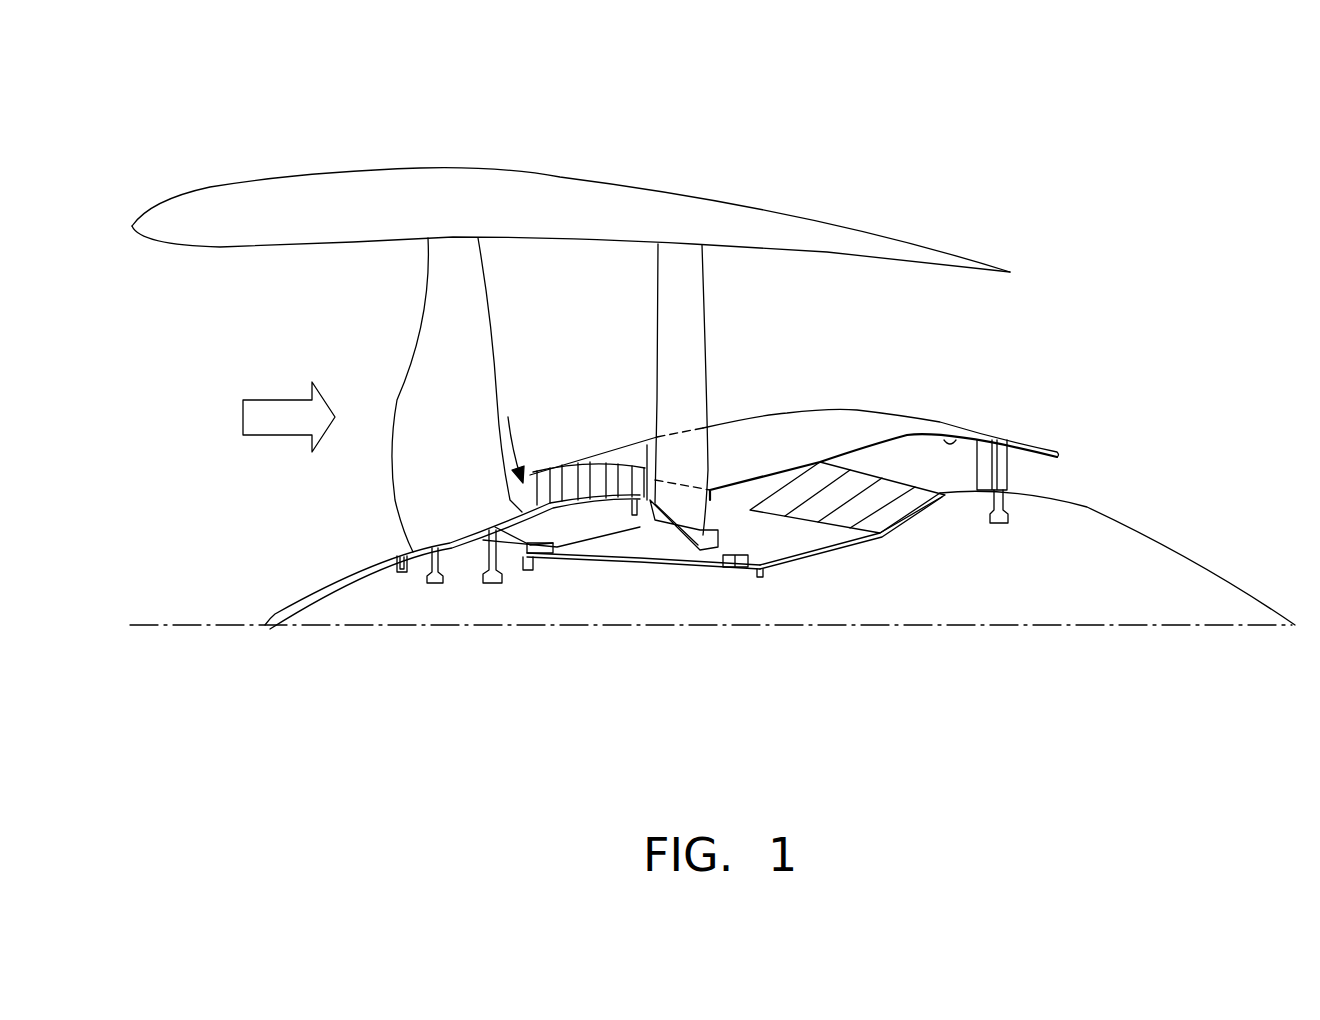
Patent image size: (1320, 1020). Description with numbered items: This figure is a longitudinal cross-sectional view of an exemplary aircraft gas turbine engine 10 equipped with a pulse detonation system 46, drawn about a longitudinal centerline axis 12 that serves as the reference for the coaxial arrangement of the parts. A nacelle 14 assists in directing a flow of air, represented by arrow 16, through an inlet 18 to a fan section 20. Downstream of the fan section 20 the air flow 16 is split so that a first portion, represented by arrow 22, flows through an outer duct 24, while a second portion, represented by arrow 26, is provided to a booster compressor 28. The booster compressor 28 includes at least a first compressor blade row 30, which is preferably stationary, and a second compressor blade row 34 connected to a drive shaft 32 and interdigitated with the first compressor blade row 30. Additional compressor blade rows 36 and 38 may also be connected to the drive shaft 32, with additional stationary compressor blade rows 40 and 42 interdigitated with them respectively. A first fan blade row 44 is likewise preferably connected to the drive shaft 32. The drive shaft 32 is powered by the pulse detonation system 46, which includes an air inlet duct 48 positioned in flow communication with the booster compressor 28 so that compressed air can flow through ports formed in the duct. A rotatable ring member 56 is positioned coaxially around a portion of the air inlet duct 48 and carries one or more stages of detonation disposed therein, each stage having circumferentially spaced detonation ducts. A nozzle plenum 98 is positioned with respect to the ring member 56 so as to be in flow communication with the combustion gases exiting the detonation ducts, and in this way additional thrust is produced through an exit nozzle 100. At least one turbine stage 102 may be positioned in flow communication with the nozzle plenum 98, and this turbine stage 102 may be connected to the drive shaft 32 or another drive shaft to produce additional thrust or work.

The gas turbine engine 10 is at (868, 170).
The longitudinal centerline axis 12 is at (447, 626).
The nacelle 14 is at (212, 186).
The air flow 16 is at (262, 398).
The inlet 18 is at (250, 247).
The fan section 20 is at (395, 498).
The first portion of air flow 22 is at (572, 360).
The outer duct 24 is at (815, 255).
The second portion of air flow 26 is at (500, 437).
The booster compressor 28 is at (602, 462).
The first compressor blade row 30 is at (553, 510).
The drive shaft 32 is at (622, 566).
The second compressor blade row 34 is at (570, 475).
The additional compressor blade row 36 is at (605, 495).
The additional compressor blade row 38 is at (650, 472).
The additional stationary compressor blade row 40 is at (590, 457).
The additional stationary compressor blade row 42 is at (618, 492).
The first fan blade row 44 is at (455, 300).
The pulse detonation system 46 is at (818, 462).
The air inlet duct 48 is at (808, 545).
The rotatable ring member 56 is at (740, 490).
The nozzle plenum 98 is at (935, 470).
The exit nozzle 100 is at (955, 440).
The turbine stage 102 is at (1000, 445).